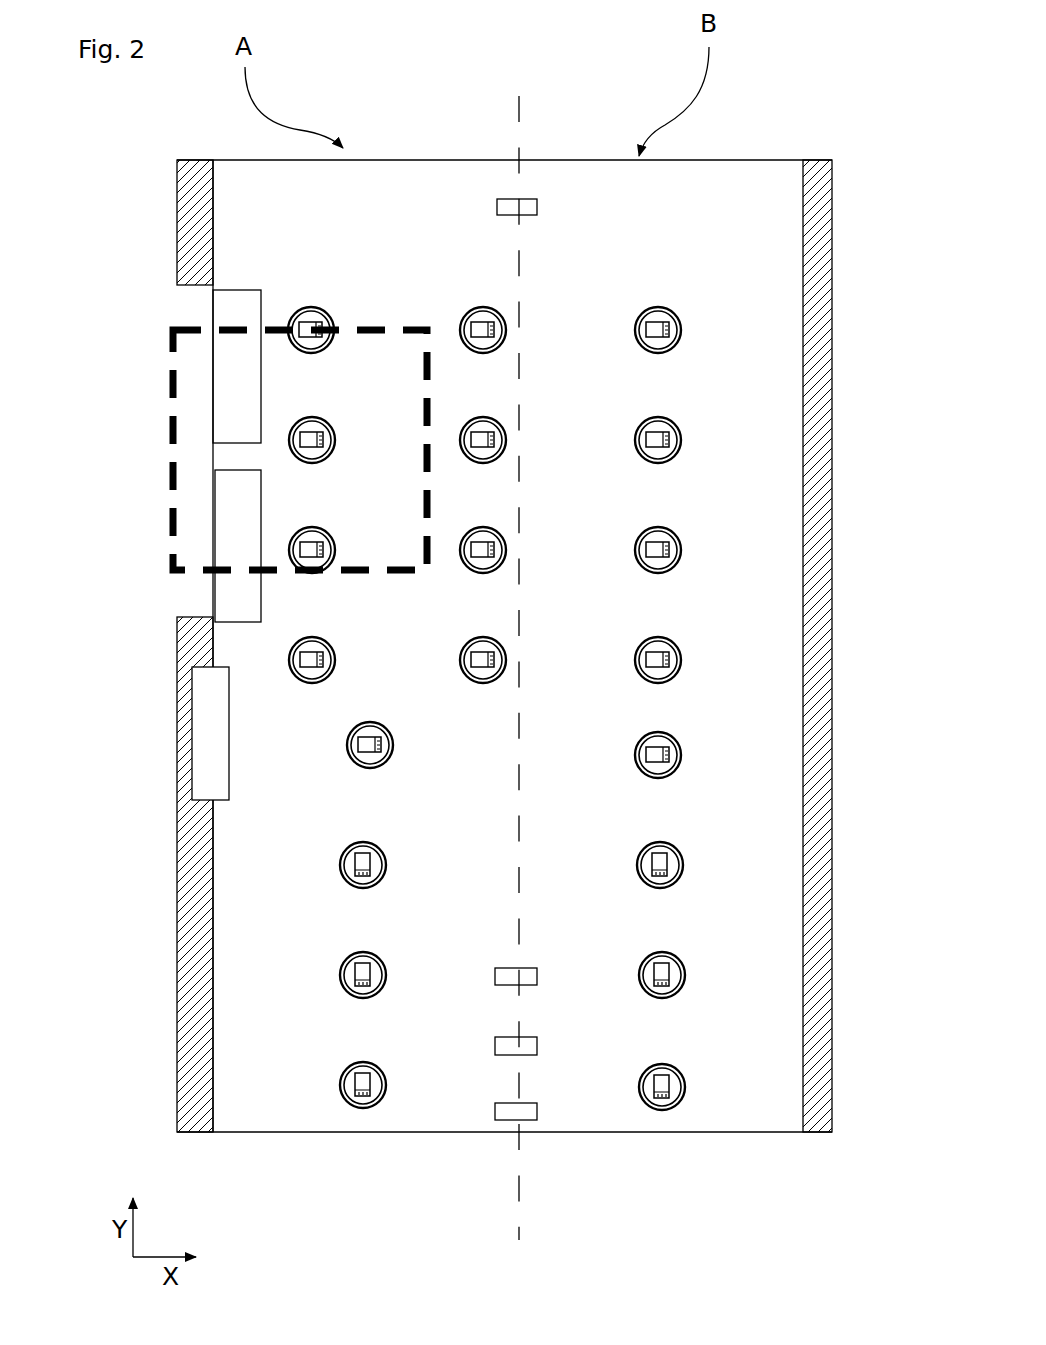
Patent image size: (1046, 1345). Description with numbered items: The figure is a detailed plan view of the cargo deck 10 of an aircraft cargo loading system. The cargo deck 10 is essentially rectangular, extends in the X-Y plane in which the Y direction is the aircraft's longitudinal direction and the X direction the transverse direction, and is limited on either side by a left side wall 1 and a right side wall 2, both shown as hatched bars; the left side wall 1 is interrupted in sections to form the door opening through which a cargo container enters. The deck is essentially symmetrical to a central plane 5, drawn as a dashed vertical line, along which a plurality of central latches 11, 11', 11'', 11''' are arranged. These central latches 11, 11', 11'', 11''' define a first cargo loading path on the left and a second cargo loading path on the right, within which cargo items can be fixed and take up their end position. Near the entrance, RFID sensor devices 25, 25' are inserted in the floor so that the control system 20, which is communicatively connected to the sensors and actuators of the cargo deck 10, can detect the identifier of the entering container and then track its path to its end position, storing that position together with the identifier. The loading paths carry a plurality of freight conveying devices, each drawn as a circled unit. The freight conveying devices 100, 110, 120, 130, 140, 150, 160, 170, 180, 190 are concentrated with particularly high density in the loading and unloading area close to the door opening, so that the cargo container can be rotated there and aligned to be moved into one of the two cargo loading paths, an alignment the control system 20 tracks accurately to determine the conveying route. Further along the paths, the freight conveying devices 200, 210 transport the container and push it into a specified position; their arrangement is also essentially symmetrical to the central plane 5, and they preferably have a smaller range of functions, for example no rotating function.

The left side wall 1 is at (192, 868).
The right side wall 2 is at (812, 328).
The central plane 5 is at (503, 1175).
The cargo deck 10 is at (232, 957).
The central latch 11 is at (551, 1180).
The central latch 11' is at (600, 1141).
The central latch 11'' is at (644, 1101).
The central latch 11''' is at (573, 133).
The control system 20 is at (212, 781).
The RFID sensor device 25 is at (164, 551).
The RFID sensor device 25' is at (156, 358).
The freight conveying device 100 is at (280, 328).
The freight conveying device 110 is at (280, 440).
The freight conveying device 120 is at (280, 550).
The freight conveying device 130 is at (280, 660).
The freight conveying device 140 is at (483, 305).
The freight conveying device 150 is at (485, 416).
The freight conveying device 160 is at (457, 550).
The freight conveying device 170 is at (483, 686).
The freight conveying device 180 is at (661, 727).
The freight conveying device 190 is at (662, 837).
The freight conveying device 200 is at (697, 975).
The freight conveying device 210 is at (694, 1085).